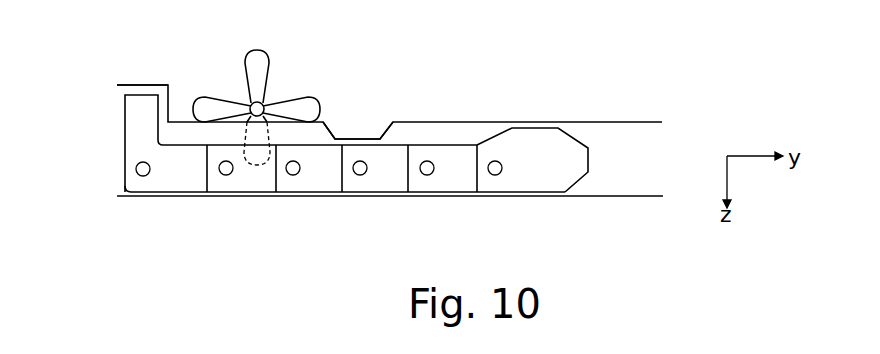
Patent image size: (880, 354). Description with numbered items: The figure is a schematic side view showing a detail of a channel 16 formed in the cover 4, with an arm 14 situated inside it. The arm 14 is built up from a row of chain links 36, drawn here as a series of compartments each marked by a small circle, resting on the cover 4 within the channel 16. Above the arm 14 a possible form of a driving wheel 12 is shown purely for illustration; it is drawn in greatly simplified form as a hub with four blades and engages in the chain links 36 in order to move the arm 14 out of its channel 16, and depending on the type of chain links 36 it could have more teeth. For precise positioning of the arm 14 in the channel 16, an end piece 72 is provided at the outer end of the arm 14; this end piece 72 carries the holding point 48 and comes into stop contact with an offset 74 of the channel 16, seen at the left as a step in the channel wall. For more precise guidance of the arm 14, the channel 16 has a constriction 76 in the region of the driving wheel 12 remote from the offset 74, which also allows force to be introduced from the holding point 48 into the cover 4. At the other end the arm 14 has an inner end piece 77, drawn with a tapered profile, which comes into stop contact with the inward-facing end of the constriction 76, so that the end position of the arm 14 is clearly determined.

The cover 4 is at (657, 196).
The driving wheel 12 is at (250, 70).
The arm 14 is at (217, 200).
The channel 16 is at (622, 140).
The chain links 36 is at (323, 182).
The holding point 48 is at (143, 177).
The end piece 72 is at (142, 147).
The offset 74 is at (152, 85).
The constriction 76 is at (363, 131).
The inner end piece 77 is at (525, 135).